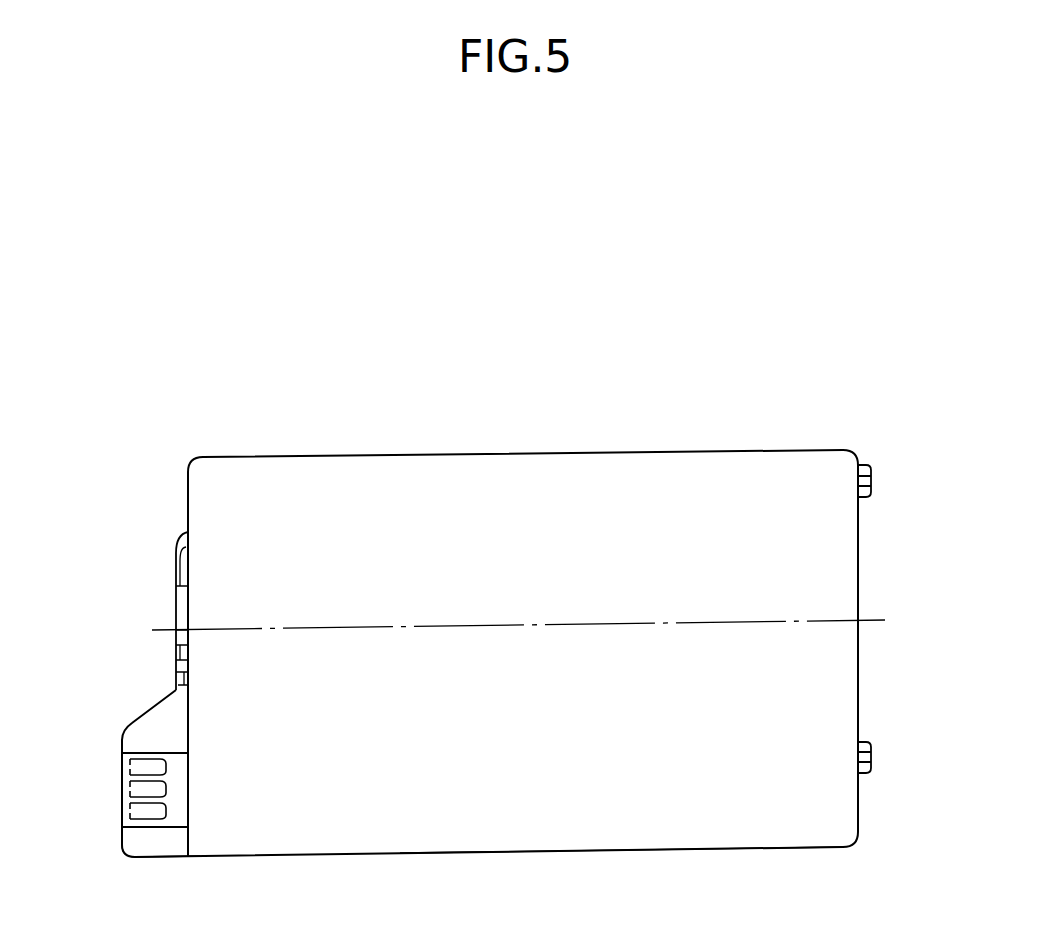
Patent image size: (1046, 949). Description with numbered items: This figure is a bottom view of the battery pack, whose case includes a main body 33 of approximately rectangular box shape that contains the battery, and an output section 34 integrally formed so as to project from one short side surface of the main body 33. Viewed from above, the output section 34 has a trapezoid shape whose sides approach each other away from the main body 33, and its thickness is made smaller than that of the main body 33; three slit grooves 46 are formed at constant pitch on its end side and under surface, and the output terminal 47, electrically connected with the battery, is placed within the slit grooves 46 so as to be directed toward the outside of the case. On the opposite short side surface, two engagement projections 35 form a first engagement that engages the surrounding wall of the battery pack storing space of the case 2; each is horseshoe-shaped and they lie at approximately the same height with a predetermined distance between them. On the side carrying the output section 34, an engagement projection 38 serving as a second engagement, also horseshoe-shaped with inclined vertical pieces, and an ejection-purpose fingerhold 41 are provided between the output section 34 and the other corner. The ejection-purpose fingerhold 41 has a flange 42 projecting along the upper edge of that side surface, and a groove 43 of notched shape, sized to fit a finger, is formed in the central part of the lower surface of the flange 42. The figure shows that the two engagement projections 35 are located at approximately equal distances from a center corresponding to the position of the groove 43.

The case 2 is at (437, 456).
The main body 33 is at (590, 838).
The output section 34 is at (168, 843).
The engagement projection 35 is at (871, 477).
The engagement projection 38 is at (178, 652).
The ejection-purpose fingerhold 41 is at (176, 548).
The flange 42 is at (178, 571).
The groove 43 is at (178, 612).
The slit groove 46 is at (166, 810).
The output terminal 47 is at (128, 814).